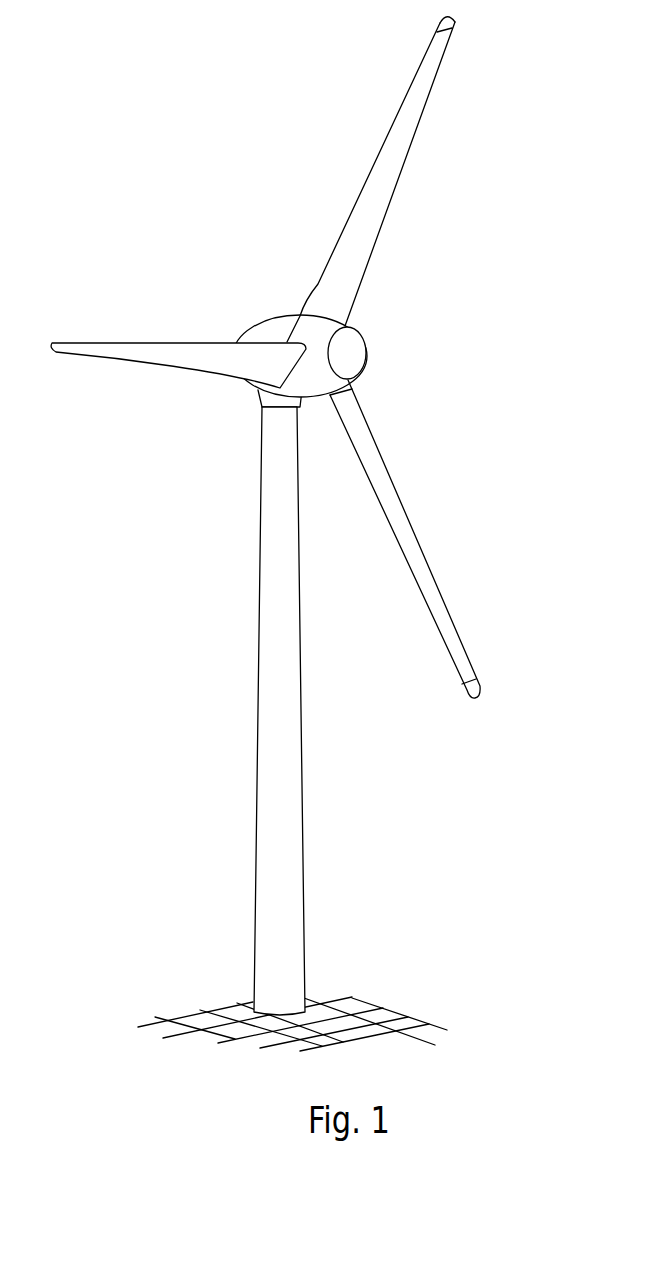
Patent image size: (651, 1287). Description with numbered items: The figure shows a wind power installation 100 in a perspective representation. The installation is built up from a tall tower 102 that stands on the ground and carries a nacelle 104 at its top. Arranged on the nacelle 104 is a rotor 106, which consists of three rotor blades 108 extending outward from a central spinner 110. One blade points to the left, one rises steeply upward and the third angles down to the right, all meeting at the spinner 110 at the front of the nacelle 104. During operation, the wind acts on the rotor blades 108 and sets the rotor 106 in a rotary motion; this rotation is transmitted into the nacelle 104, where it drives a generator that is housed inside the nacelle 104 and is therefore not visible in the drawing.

The wind power installation 100 is at (309, 534).
The tower 102 is at (285, 803).
The nacelle 104 is at (273, 330).
The rotor 106 is at (309, 357).
The rotor blades 108 is at (408, 132).
The spinner 110 is at (352, 353).